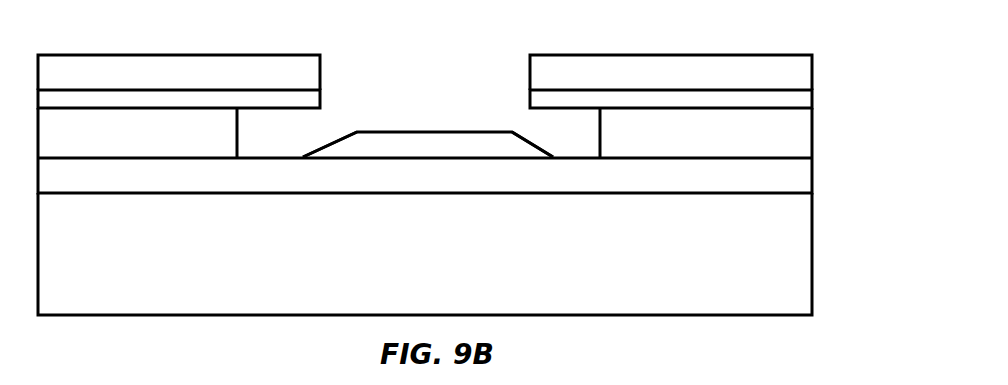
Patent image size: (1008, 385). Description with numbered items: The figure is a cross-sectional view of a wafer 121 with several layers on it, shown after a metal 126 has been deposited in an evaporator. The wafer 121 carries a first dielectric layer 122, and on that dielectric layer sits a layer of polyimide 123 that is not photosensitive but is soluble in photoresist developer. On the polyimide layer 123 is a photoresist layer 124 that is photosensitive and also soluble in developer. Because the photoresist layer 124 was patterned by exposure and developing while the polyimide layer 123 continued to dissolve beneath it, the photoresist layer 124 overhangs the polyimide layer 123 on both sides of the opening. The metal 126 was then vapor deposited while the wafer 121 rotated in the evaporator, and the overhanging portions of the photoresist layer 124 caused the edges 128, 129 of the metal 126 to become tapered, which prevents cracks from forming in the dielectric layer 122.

The wafer 121 is at (790, 265).
The first dielectric layer 122 is at (788, 182).
The layer of polyimide 123 is at (772, 142).
The photoresist layer 124 is at (755, 97).
The metal 126 is at (410, 143).
The edge of the metal 128 is at (332, 135).
The edge of the metal 129 is at (528, 137).